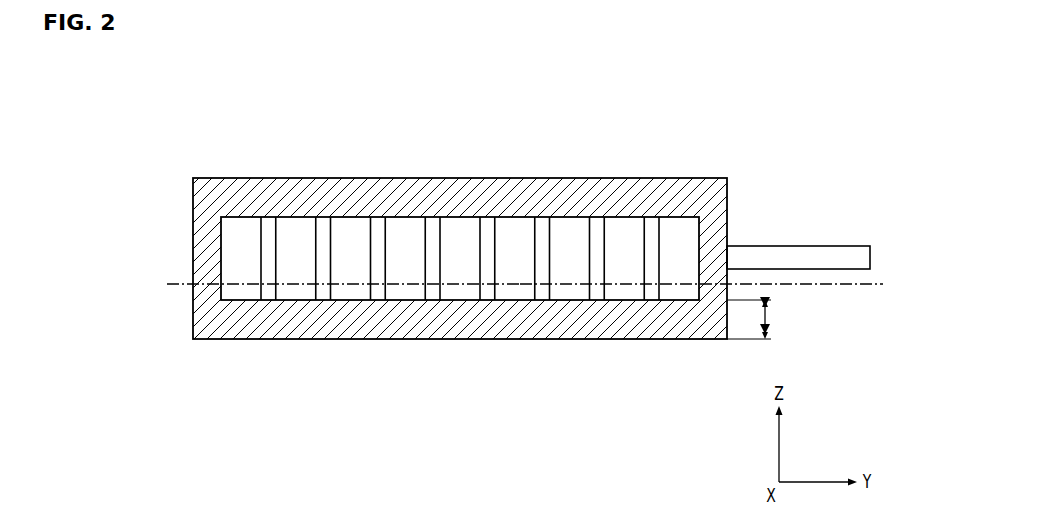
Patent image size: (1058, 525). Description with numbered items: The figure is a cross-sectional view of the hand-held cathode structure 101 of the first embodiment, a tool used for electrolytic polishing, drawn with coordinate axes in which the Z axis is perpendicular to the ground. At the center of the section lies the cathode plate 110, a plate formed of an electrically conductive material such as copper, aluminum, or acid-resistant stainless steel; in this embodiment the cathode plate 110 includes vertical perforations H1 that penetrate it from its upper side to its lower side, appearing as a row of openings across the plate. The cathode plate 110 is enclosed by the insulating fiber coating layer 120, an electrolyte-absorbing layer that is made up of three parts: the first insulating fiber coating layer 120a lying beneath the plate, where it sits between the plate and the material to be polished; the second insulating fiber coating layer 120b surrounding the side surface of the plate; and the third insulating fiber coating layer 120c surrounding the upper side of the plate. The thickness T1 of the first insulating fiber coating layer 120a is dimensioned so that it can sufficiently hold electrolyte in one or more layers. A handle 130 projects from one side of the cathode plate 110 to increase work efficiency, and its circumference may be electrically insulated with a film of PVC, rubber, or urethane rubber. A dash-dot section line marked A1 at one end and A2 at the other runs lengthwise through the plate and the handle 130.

The hand-held cathode structure 101 is at (462, 203).
The cathode plate 110 is at (465, 204).
The insulating fiber coating layer 120 is at (390, 223).
The first insulating fiber coating layer 120a is at (413, 319).
The second insulating fiber coating layer 120b is at (412, 258).
The third insulating fiber coating layer 120c is at (413, 197).
The handle 130 is at (798, 188).
The vertical perforations H1 is at (652, 204).
The thickness of the first insulating fiber coating layer T1 is at (758, 319).
The axis end A1 is at (333, 286).
The axis end A2 is at (712, 286).